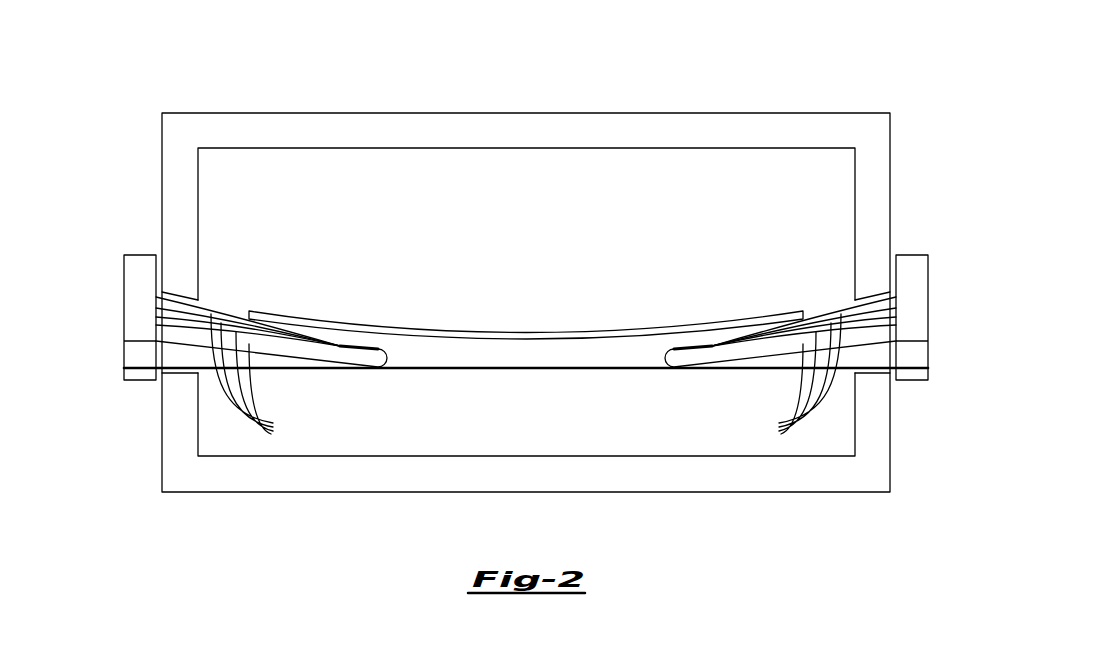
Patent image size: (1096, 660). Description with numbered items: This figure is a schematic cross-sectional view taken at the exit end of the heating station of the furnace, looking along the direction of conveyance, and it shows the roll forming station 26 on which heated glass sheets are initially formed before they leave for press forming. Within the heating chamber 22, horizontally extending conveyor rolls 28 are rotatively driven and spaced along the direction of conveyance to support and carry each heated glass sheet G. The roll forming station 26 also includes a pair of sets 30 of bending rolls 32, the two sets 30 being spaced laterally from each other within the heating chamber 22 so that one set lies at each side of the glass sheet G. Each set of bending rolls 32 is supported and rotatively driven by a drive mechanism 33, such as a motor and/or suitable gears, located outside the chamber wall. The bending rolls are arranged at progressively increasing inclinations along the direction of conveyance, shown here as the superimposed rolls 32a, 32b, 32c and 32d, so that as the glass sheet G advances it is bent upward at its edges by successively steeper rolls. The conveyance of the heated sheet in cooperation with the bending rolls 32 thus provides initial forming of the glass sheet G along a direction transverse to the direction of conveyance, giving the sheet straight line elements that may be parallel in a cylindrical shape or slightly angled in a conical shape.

The heating chamber 22 is at (337, 150).
The roll forming station 26 is at (651, 110).
The conveyor rolls 28 is at (518, 368).
The set of bending rolls 30 is at (526, 310).
The bending rolls 32 is at (526, 378).
The first bending roll 32a is at (264, 342).
The second bending roll 32b is at (259, 330).
The third bending roll 32c is at (241, 322).
The fourth bending roll 32d is at (228, 312).
The drive mechanism 33 is at (136, 289).
The glass sheet G is at (487, 332).